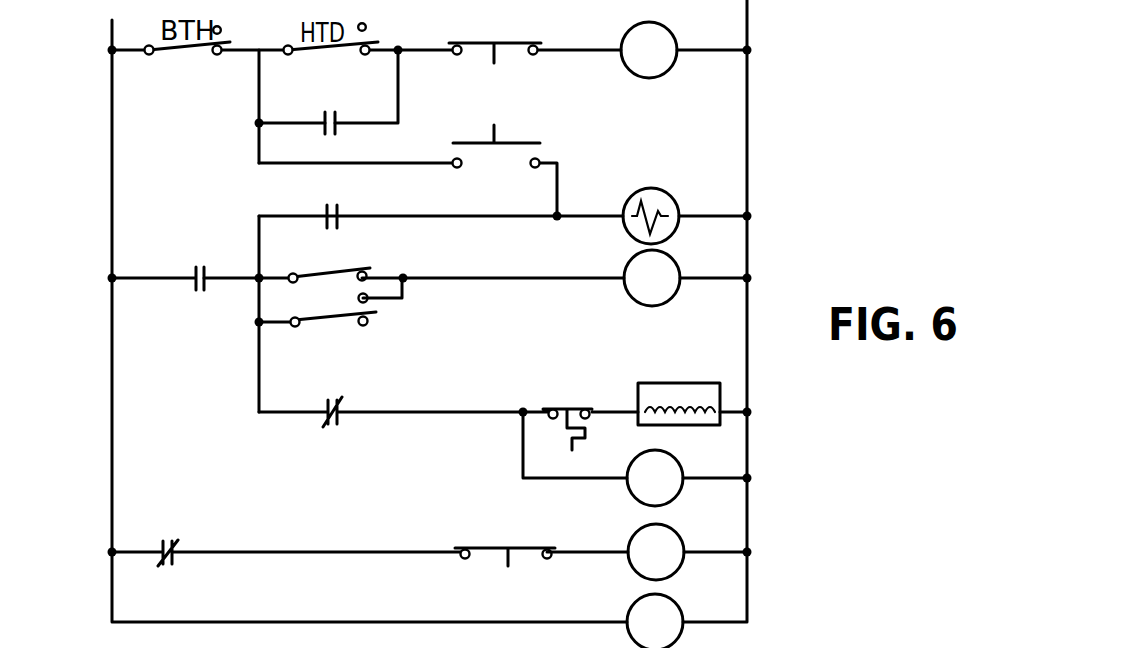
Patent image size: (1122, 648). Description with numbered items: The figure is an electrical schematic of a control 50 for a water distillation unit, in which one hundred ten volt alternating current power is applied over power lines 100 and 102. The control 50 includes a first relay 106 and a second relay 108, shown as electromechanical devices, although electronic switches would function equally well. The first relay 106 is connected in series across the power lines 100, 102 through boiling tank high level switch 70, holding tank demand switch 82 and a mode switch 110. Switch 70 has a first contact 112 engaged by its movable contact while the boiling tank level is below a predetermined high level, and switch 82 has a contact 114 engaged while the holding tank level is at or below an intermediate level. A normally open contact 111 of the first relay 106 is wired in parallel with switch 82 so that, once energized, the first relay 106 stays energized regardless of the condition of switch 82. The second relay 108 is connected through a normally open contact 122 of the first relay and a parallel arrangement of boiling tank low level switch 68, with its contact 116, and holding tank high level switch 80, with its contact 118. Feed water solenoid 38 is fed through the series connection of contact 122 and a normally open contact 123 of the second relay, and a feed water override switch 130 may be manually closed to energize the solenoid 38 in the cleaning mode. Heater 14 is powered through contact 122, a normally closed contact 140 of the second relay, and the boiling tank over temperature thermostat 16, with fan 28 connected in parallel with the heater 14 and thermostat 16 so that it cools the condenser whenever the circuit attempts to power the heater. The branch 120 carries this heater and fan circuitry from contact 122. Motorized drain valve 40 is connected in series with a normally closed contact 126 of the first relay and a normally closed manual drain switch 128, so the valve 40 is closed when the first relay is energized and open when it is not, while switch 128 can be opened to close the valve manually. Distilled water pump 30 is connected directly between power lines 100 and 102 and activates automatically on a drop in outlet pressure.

The power line 100 is at (112, 22).
The power line 102 is at (747, 12).
The boiling tank high level switch 70 is at (174, 53).
The first contact 112 is at (218, 55).
The holding tank demand switch 82 is at (329, 54).
The contact 114 is at (359, 54).
The normally open contact 111 is at (323, 128).
The control 50 is at (427, 37).
The mode switch 110 is at (500, 43).
The relay 106 is at (669, 30).
The feed water override switch 130 is at (510, 143).
The feed water solenoid 38 is at (671, 196).
The relay 108 is at (672, 258).
The normally open contact 123 is at (322, 222).
The normally open contact 122 is at (195, 285).
The boiling tank low level switch 68 is at (320, 279).
The contact 116 is at (368, 270).
The holding tank high level switch 80 is at (339, 318).
The contact 118 is at (368, 300).
The branch circuit 120 is at (259, 392).
The normally closed contact 140 is at (323, 419).
The boiling tank over temperature thermostat 16 is at (578, 405).
The heater 14 is at (650, 383).
The fan 28 is at (674, 459).
The normally closed contact 126 is at (160, 556).
The manual drain switch 128 is at (503, 548).
The motorized drain valve 40 is at (674, 531).
The distilled water pump 30 is at (674, 603).